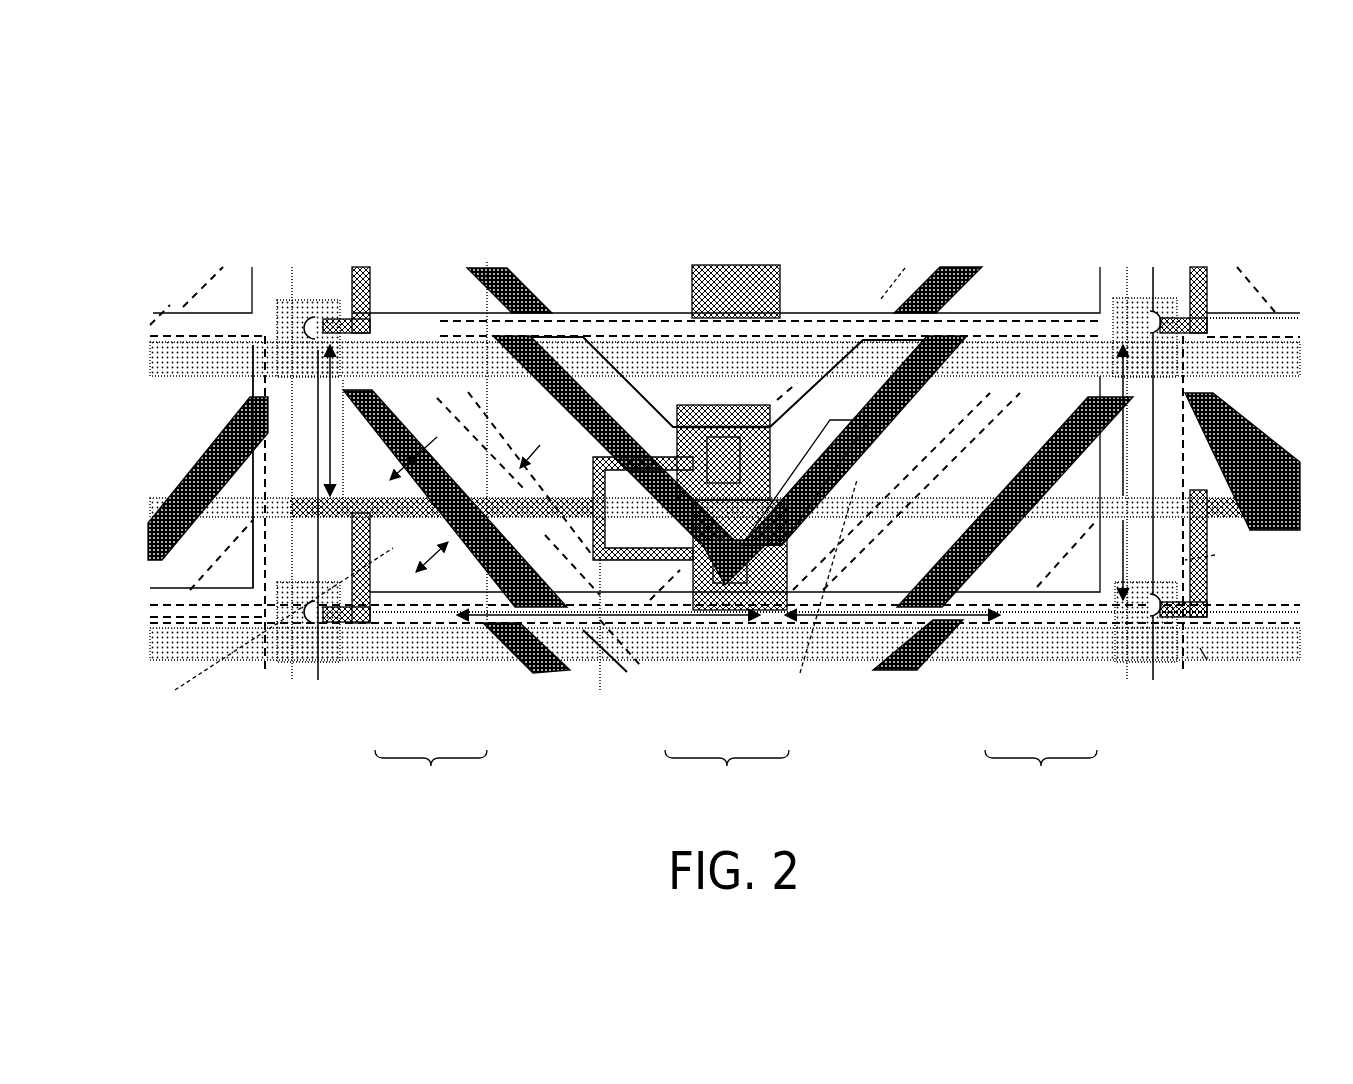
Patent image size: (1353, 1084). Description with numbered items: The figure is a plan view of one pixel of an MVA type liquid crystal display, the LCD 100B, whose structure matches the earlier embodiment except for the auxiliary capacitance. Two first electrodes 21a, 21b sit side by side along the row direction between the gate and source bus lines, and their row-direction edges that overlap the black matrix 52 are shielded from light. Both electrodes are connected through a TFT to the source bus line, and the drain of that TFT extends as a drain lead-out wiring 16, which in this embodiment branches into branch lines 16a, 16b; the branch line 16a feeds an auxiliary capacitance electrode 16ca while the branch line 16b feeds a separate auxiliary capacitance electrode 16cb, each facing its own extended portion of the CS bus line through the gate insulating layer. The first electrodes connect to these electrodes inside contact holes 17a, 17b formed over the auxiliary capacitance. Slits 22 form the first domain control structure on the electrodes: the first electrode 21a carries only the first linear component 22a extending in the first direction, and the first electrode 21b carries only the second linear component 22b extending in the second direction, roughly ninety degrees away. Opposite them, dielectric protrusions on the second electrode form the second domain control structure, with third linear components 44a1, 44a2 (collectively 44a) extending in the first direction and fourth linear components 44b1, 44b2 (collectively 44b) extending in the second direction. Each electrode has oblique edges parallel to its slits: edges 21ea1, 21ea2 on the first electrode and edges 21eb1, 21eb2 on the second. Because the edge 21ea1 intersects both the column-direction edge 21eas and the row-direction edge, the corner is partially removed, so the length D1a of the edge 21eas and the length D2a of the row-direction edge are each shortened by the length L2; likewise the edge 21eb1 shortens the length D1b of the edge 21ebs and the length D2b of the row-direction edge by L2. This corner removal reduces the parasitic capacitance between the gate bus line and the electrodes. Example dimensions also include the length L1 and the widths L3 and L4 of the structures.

The LCD 100B is at (1232, 216).
The black matrix 52 is at (252, 262).
The first electrode 21a is at (427, 262).
The first electrode 21b is at (1050, 333).
The edge of the first electrode 21a extending in the column direction 21eas is at (340, 440).
The edge of the first electrode 21b extending in the column direction 21ebs is at (1123, 457).
The edge of the first electrode 21a 21ea1 is at (175, 690).
The edge of the first electrode 21a 21ea2 is at (583, 337).
The edge of the first electrode 21b 21eb1 is at (1200, 648).
The edge of the first electrode 21b 21eb2 is at (868, 338).
The drain lead-out wiring 16 is at (487, 262).
The branch line 16a is at (600, 690).
The branch line 16b is at (640, 450).
The auxiliary capacitance electrode 16ca is at (905, 268).
The auxiliary capacitance electrode 16cb is at (738, 400).
The contact hole 17a is at (800, 400).
The contact hole 17b is at (695, 415).
The slits 22 is at (727, 770).
The first linear component 22a is at (665, 625).
The second linear component 22b is at (765, 625).
The third linear components 44a is at (431, 770).
The third linear component 44a1 is at (430, 660).
The third linear component 44a2 is at (490, 640).
The fourth linear components 44b is at (1041, 770).
The fourth linear component 44b1 is at (967, 600).
The fourth linear component 44b2 is at (1010, 590).
The length L1 is at (431, 555).
The length L2 is at (1215, 555).
The width L3 is at (413, 453).
The width L4 is at (534, 447).
The length D1a is at (330, 403).
The length D1b is at (1123, 415).
The length D2a is at (585, 600).
The length D2b is at (880, 690).